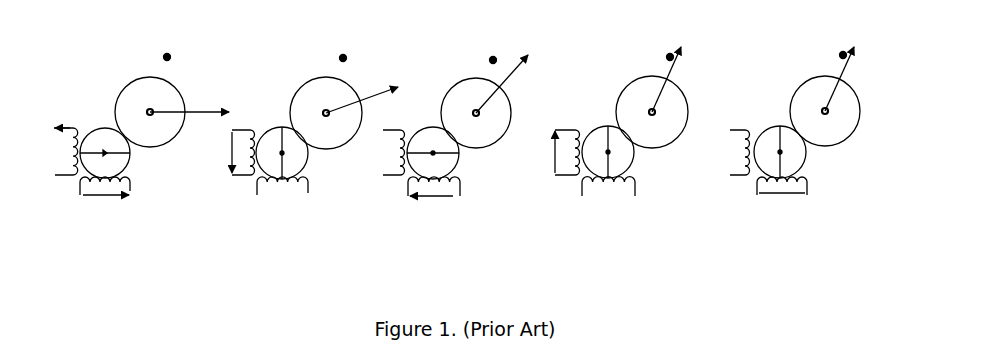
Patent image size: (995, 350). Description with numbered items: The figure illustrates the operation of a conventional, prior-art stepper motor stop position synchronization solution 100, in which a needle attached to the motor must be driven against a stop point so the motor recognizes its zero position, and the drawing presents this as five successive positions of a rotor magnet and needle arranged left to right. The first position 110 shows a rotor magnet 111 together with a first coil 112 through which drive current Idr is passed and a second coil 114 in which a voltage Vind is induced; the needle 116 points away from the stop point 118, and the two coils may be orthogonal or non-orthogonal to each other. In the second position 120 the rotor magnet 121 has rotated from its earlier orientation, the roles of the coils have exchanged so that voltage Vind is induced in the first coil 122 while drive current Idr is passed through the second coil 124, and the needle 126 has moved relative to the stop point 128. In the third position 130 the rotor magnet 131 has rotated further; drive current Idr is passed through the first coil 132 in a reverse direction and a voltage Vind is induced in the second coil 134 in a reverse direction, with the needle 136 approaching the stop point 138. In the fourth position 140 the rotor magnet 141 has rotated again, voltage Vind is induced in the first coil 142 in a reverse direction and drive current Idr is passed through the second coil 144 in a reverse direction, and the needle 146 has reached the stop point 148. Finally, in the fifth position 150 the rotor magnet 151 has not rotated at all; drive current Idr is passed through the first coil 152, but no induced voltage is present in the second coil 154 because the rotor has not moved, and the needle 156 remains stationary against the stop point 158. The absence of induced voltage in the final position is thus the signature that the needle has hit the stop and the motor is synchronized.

The stepper motor stop position synchronization solution 100 is at (86, 26).
The first position 110 is at (126, 140).
The rotor magnet 111 is at (119, 153).
The first coil 112 is at (50, 148).
The second coil 114 is at (93, 197).
The needle 116 is at (189, 104).
The stop point 118 is at (163, 48).
The second position 120 is at (303, 140).
The rotor magnet 121 is at (295, 153).
The first coil 122 is at (227, 151).
The second coil 124 is at (268, 196).
The needle 126 is at (365, 91).
The stop point 128 is at (353, 49).
The third position 130 is at (461, 141).
The rotor magnet 131 is at (446, 153).
The first coil 132 is at (387, 145).
The second coil 134 is at (420, 197).
The needle 136 is at (514, 78).
The stop point 138 is at (487, 51).
The fourth position 140 is at (615, 139).
The rotor magnet 141 is at (621, 152).
The first coil 142 is at (550, 145).
The second coil 144 is at (594, 196).
The needle 146 is at (681, 79).
The stop point 148 is at (659, 49).
The fifth position 150 is at (797, 138).
The rotor magnet 151 is at (794, 152).
The first coil 152 is at (731, 143).
The second coil 154 is at (767, 194).
The needle 156 is at (852, 79).
The stop point 158 is at (833, 47).